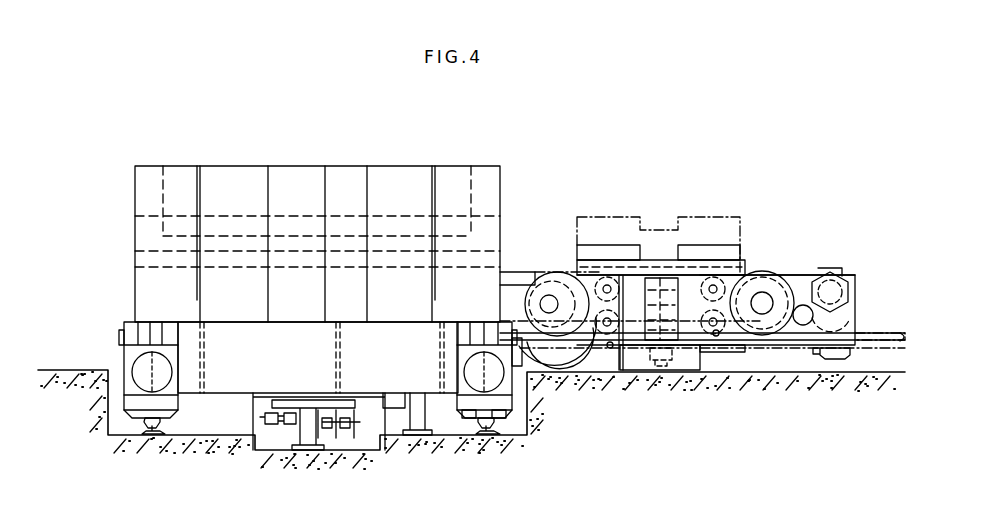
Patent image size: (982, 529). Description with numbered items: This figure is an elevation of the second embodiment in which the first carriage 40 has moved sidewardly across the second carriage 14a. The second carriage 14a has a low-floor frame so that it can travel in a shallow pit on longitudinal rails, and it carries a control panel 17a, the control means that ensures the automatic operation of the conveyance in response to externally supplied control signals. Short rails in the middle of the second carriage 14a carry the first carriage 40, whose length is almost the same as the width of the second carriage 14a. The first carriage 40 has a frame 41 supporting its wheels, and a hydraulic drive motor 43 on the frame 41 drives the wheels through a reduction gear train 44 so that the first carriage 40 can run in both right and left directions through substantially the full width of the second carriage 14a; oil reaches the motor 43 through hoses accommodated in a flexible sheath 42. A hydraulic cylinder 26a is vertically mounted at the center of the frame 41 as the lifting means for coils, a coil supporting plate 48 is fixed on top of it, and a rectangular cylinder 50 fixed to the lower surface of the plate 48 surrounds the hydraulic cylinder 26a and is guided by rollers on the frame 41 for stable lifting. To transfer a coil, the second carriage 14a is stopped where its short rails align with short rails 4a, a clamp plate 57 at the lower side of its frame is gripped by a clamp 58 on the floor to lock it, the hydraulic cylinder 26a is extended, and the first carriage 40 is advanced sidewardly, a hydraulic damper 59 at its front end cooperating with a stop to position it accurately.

The second carriage 14a is at (128, 291).
The control panel 17a is at (347, 168).
The clamp plate 57 is at (392, 408).
The clamp 58 is at (418, 402).
The flexible sheath 42 is at (548, 362).
The coil supporting plate 48 is at (660, 266).
The first carriage 40 is at (748, 268).
The hydraulic drive motor 43 is at (835, 270).
The frame 41 is at (852, 292).
The reduction gear train 44 is at (840, 318).
The short rail 4a is at (902, 350).
The hydraulic cylinder 26a is at (664, 372).
The rectangular cylinder 50 is at (718, 345).
The hydraulic damper 59 is at (836, 358).